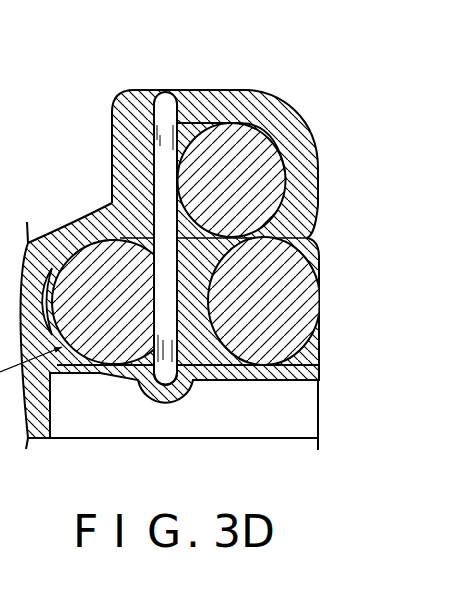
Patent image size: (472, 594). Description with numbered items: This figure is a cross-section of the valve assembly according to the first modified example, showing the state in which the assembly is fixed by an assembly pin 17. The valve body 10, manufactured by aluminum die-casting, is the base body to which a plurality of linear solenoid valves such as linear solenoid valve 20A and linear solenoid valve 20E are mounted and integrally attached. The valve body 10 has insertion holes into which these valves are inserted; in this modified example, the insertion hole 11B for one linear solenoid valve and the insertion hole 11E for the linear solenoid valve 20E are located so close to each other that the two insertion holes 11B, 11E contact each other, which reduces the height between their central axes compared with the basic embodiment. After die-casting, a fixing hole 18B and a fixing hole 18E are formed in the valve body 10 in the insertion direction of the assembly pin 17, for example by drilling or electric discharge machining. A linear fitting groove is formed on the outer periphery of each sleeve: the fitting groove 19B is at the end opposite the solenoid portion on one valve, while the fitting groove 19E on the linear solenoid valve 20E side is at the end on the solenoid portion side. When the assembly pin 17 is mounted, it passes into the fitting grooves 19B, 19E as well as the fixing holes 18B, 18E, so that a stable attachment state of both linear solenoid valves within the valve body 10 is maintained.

The valve body 10 is at (193, 393).
The insertion hole 11B is at (107, 357).
The insertion hole 11E is at (272, 150).
The assembly pin 17 is at (156, 168).
The fixing hole 18B is at (158, 388).
The fixing hole 18E is at (165, 91).
The fitting groove 19B is at (115, 230).
The fitting groove 19E is at (180, 123).
The linear solenoid valve 20A is at (311, 253).
The linear solenoid valve 20E is at (243, 130).